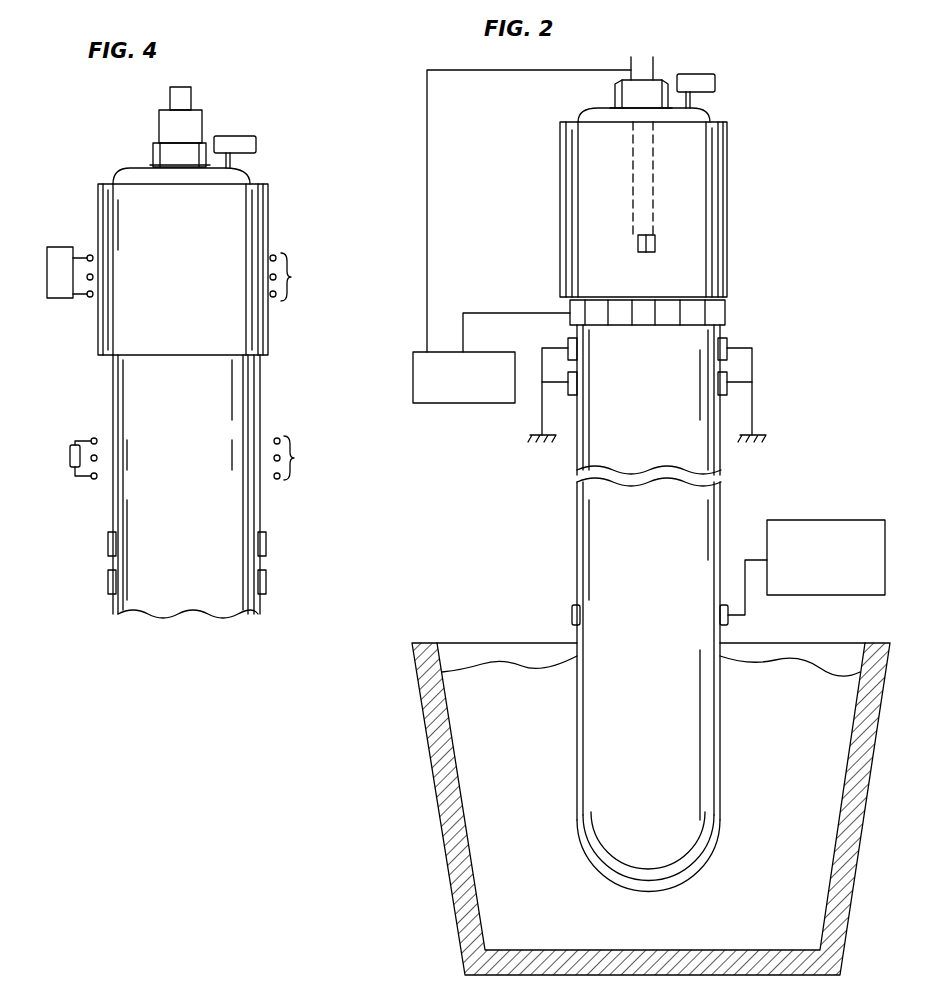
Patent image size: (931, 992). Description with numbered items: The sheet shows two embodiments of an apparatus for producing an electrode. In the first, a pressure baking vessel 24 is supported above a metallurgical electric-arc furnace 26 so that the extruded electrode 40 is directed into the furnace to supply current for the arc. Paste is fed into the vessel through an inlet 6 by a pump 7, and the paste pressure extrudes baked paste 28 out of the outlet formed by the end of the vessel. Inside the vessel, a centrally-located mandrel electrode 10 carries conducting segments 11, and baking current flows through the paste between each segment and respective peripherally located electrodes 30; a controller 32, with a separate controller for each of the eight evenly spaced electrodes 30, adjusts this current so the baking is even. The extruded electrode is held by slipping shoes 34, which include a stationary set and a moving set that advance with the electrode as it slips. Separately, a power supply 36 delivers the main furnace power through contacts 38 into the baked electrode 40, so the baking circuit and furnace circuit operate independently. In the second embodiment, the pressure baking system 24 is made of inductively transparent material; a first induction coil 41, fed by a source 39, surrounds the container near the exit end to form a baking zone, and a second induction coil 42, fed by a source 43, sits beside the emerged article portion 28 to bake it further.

In FIG. 4, the inlet 6 is at (231, 160).
In FIG. 2, the inlet 6 is at (692, 98).
In FIG. 4, the pump 7 is at (236, 136).
In FIG. 2, the pump 7 is at (695, 74).
In FIG. 2, the mandrel electrode 10 is at (655, 198).
In FIG. 2, the conducting segment 11 is at (640, 244).
In FIG. 4, the pressure baking vessel 24 is at (200, 272).
In FIG. 2, the pressure baking vessel 24 is at (600, 210).
In FIG. 2, the metallurgical electric-arc furnace 26 is at (428, 773).
In FIG. 4, the baked paste 28 is at (200, 487).
In FIG. 2, the baked paste 28 is at (662, 434).
In FIG. 2, the peripherally located electrodes 30 is at (725, 312).
In FIG. 2, the controller 32 is at (483, 391).
In FIG. 4, the slipping shoes 34 is at (266, 580).
In FIG. 2, the slipping shoes 34 is at (727, 350).
In FIG. 2, the power supply 36 is at (842, 566).
In FIG. 2, the contacts 38 is at (572, 612).
In FIG. 4, the source 39 is at (60, 247).
In FIG. 2, the extruded electrode 40 is at (640, 606).
In FIG. 4, the first induction coil 41 is at (297, 277).
In FIG. 4, the second induction coil 42 is at (301, 458).
In FIG. 4, the source 43 is at (70, 452).